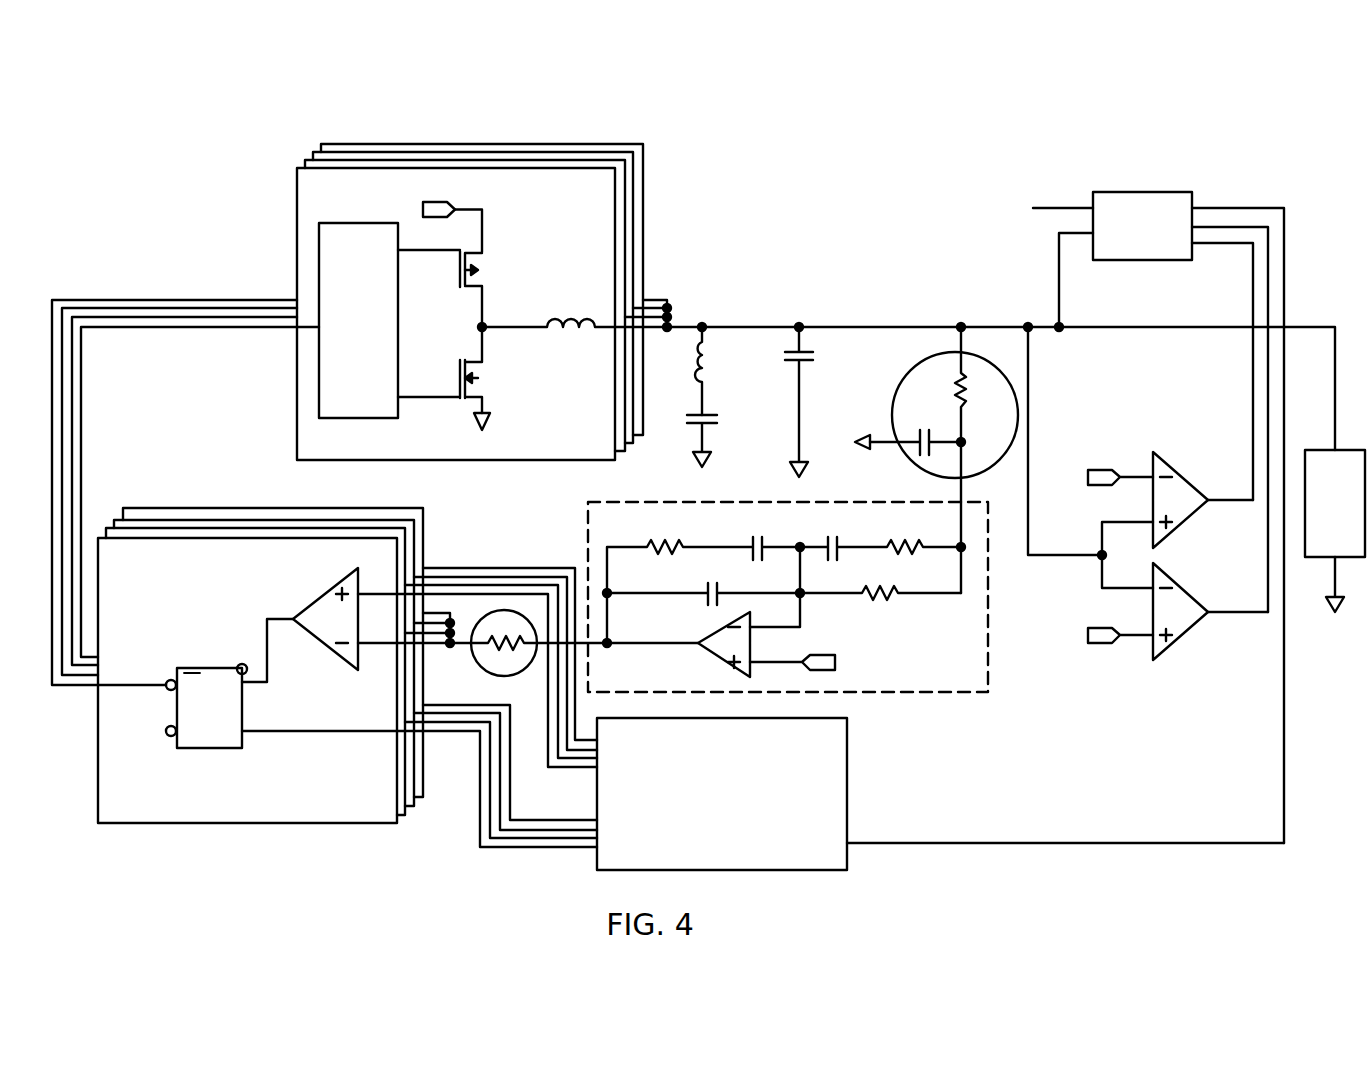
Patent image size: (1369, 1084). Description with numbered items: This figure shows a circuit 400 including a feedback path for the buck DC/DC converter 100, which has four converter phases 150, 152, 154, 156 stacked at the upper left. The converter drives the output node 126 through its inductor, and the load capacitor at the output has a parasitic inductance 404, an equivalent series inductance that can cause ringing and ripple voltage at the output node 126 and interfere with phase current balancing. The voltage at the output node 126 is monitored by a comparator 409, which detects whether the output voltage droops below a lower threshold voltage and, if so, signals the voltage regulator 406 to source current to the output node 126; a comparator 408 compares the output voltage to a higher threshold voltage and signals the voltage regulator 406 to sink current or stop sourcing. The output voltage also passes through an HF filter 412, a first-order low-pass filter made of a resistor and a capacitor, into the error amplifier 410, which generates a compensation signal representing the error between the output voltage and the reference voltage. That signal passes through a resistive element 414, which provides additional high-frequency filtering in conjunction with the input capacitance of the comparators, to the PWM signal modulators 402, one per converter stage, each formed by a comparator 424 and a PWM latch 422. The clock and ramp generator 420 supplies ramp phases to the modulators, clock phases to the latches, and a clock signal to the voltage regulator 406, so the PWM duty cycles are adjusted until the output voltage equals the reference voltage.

The circuit 400 is at (115, 152).
The buck DC/DC converter 100 is at (283, 180).
The converter phase 150 is at (434, 168).
The converter phase 152 is at (497, 160).
The converter phase 154 is at (562, 152).
The converter phase 156 is at (632, 144).
The parasitic inductance 404 is at (690, 377).
The output node 126 is at (961, 327).
The HF filter 412 is at (913, 460).
The voltage regulator 406 is at (1130, 192).
The comparator 408 is at (1165, 455).
The comparator 409 is at (1178, 640).
The PWM signal modulator 402 is at (188, 497).
The comparator 424 is at (330, 588).
The resistive element 414 is at (472, 655).
The pulse-width modulation latch 422 is at (200, 750).
The error amplifier 410 is at (928, 692).
The clock and ramp generator 420 is at (847, 740).